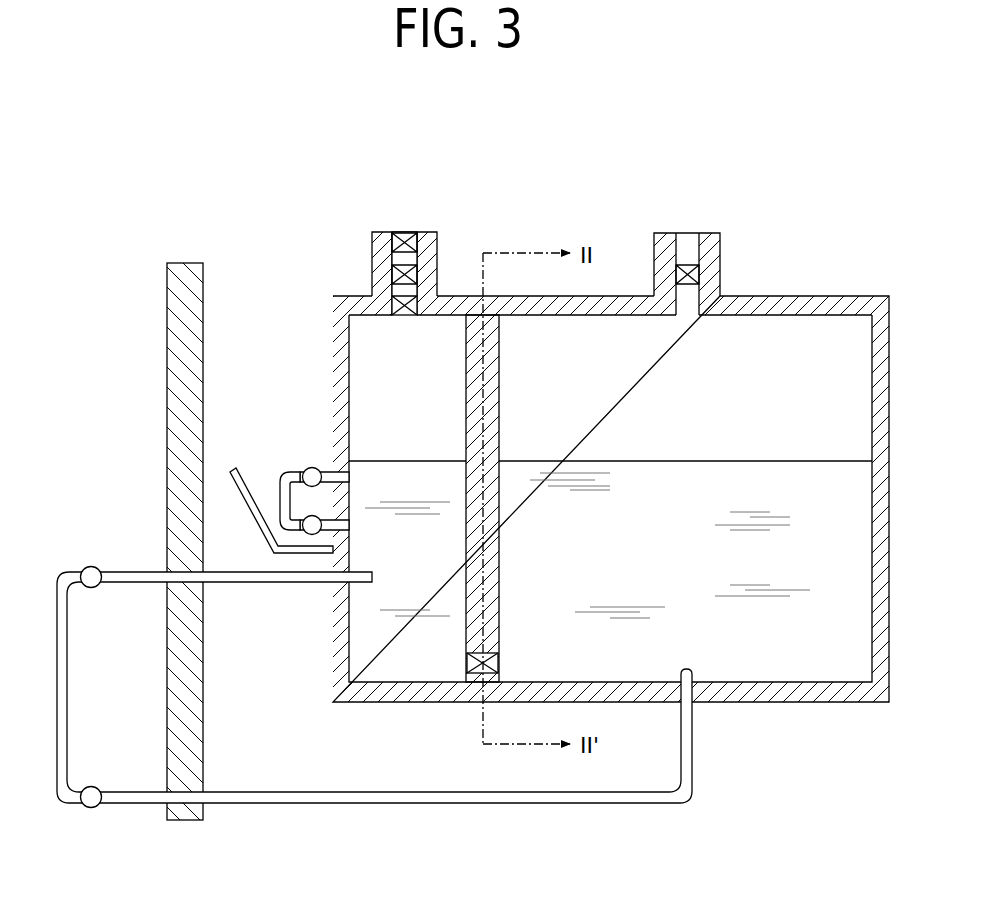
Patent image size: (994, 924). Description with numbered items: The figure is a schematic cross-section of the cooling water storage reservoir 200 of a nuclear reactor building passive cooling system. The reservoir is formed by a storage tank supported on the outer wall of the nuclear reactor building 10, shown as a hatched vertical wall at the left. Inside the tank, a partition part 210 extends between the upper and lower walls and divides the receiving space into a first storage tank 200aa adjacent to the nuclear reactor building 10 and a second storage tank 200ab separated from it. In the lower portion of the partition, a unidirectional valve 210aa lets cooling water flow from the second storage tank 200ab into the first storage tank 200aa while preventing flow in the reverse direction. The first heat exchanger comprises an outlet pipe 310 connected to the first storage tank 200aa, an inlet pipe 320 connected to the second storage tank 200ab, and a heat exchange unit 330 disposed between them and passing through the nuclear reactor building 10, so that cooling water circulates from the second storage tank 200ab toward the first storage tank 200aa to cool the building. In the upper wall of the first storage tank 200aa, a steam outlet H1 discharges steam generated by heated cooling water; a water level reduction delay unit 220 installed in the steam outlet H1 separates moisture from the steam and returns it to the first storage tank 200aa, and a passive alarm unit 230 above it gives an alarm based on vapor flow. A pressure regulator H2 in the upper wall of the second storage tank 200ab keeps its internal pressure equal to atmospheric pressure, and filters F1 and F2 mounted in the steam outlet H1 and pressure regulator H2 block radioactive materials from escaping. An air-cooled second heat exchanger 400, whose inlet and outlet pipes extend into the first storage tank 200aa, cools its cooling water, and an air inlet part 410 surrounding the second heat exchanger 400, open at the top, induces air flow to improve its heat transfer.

The nuclear reactor building 10 is at (167, 273).
The cooling water storage reservoir 200 is at (820, 296).
The first storage tank 200aa is at (443, 375).
The second storage tank 200ab is at (730, 376).
The partition part 210 is at (467, 637).
The unidirectional valve 210aa is at (467, 664).
The water level reduction delay unit 220 is at (388, 303).
The passive alarm unit 230 is at (420, 270).
The steam outlet H1 is at (383, 232).
The filter F1 is at (401, 232).
The pressure regulator H2 is at (664, 233).
The filter F2 is at (686, 265).
The second heat exchanger 400 is at (284, 470).
The air inlet part 410 is at (233, 468).
The outlet pipe 310 is at (117, 586).
The inlet pipe 320 is at (130, 804).
The heat exchange unit 330 is at (67, 692).